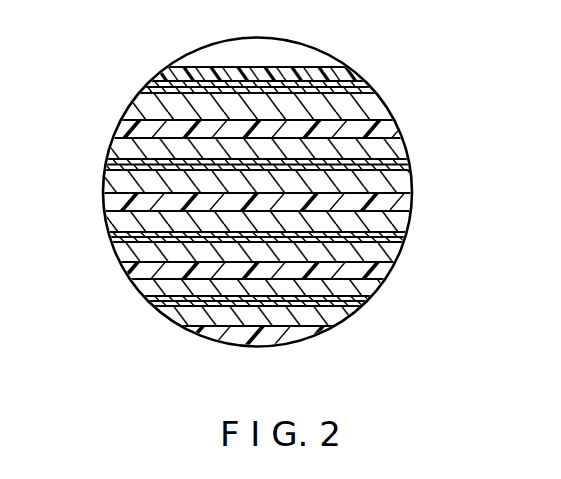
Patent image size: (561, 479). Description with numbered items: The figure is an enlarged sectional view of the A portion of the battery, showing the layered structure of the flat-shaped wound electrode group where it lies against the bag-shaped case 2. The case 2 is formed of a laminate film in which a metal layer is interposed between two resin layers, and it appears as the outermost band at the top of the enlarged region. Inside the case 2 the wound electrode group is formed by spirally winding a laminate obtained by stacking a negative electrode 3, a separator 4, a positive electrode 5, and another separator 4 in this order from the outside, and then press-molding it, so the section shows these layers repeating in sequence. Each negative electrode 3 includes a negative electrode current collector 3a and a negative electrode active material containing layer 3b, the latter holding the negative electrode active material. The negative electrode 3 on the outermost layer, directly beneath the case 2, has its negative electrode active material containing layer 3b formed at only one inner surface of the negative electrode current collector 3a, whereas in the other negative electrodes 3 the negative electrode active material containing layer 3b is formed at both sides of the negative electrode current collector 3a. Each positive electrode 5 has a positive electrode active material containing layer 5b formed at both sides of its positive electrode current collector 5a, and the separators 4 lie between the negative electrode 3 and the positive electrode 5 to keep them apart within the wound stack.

The A portion A is at (187, 62).
The bag-shaped case 2 is at (353, 81).
The negative electrode 3 is at (300, 174).
The negative electrode current collector 3a is at (368, 91).
The negative electrode active material containing layer 3b is at (372, 108).
The separator 4 is at (122, 125).
The positive electrode 5 is at (302, 247).
The positive electrode current collector 5a is at (393, 163).
The positive electrode active material containing layer 5b is at (393, 144).